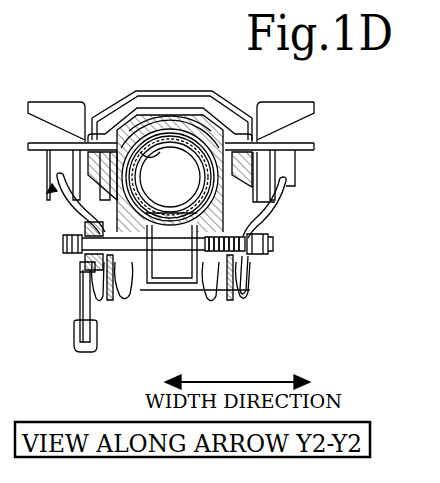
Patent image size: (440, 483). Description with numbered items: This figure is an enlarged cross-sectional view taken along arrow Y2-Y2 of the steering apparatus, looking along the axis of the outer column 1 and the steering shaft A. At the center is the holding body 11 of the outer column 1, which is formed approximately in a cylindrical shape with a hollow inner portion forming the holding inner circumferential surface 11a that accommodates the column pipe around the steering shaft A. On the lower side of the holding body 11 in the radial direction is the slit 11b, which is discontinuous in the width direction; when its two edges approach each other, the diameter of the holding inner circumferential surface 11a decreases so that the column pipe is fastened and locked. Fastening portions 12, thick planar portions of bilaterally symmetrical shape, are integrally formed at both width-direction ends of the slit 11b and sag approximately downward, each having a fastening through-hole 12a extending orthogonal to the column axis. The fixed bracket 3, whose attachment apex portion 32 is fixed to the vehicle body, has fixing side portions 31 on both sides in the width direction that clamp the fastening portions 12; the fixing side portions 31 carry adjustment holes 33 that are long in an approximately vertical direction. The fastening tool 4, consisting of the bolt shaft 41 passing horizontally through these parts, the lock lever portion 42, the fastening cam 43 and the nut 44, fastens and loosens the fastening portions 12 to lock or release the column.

The outer column 1 is at (190, 112).
The fixed bracket 3 is at (292, 162).
The fastening tool 4 is at (79, 284).
The holding body 11 is at (168, 140).
The holding inner circumferential surface 11a is at (143, 152).
The slit 11b is at (224, 213).
The fastening portion 12 is at (103, 270).
The fastening through-hole 12a is at (90, 234).
The fixing side portion 31 is at (108, 295).
The attachment apex portion 32 is at (110, 104).
The adjustment hole 33 is at (94, 343).
The bolt shaft 41 is at (167, 248).
The lock lever portion 42 is at (80, 300).
The fastening cam 43 is at (72, 262).
The nut 44 is at (264, 256).
The steering shaft A is at (205, 148).